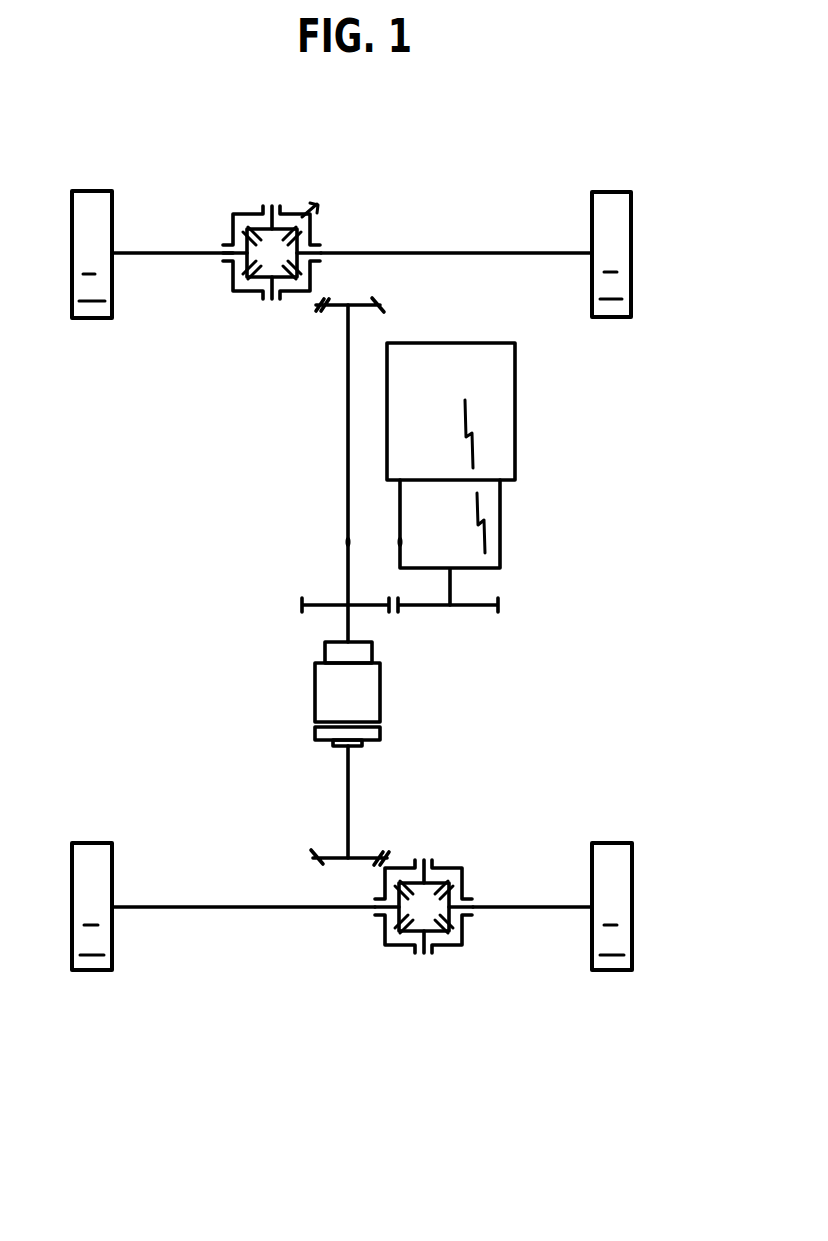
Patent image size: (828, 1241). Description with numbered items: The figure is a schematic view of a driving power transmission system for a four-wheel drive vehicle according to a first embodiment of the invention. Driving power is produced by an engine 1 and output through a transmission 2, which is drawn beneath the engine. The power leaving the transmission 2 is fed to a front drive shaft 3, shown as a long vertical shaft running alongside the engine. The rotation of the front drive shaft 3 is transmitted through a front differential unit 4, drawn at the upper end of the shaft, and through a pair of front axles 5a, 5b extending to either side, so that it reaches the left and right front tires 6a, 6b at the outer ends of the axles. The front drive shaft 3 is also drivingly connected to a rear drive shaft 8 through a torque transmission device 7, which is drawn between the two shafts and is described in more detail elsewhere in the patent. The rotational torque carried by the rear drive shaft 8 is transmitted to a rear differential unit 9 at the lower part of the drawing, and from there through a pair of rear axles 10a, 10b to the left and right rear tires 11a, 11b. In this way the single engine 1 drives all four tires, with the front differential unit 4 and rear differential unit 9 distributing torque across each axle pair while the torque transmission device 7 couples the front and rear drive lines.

The engine 1 is at (500, 441).
The transmission 2 is at (490, 538).
The front drive shaft 3 is at (345, 437).
The front differential unit 4 is at (298, 213).
The front axle 5a is at (172, 253).
The front axle 5b is at (480, 251).
The left front tire 6a is at (102, 200).
The right front tire 6b is at (625, 219).
The torque transmission device 7 is at (376, 693).
The rear drive shaft 8 is at (350, 788).
The rear differential unit 9 is at (447, 946).
The rear axle 10a is at (237, 910).
The rear axle 10b is at (527, 910).
The left rear tire 11a is at (93, 970).
The right rear tire 11b is at (613, 970).